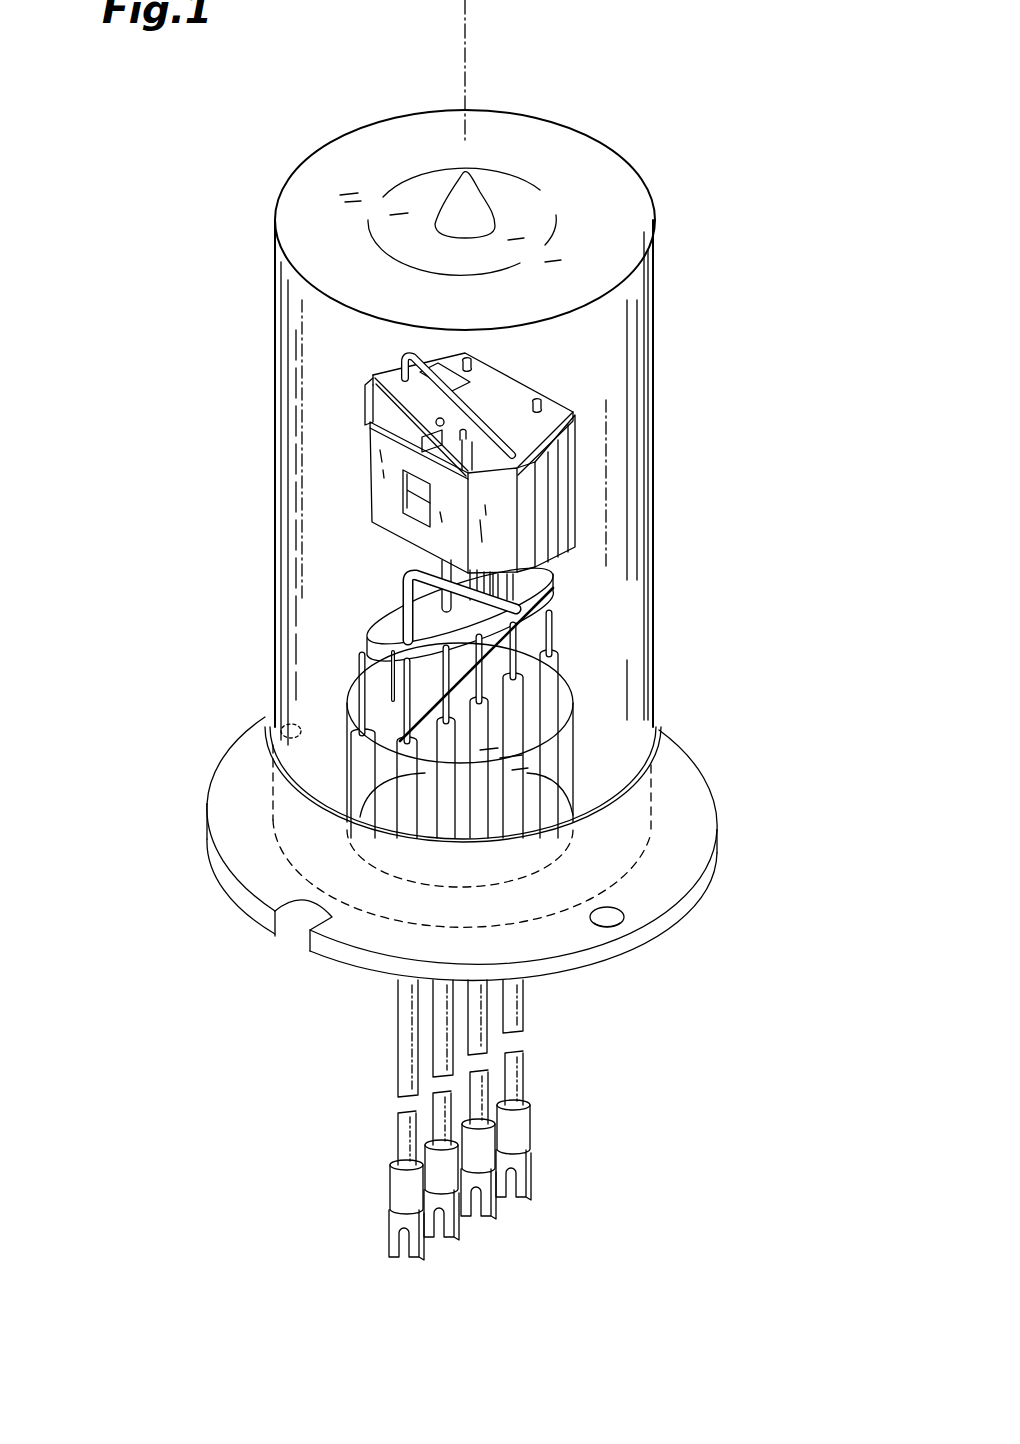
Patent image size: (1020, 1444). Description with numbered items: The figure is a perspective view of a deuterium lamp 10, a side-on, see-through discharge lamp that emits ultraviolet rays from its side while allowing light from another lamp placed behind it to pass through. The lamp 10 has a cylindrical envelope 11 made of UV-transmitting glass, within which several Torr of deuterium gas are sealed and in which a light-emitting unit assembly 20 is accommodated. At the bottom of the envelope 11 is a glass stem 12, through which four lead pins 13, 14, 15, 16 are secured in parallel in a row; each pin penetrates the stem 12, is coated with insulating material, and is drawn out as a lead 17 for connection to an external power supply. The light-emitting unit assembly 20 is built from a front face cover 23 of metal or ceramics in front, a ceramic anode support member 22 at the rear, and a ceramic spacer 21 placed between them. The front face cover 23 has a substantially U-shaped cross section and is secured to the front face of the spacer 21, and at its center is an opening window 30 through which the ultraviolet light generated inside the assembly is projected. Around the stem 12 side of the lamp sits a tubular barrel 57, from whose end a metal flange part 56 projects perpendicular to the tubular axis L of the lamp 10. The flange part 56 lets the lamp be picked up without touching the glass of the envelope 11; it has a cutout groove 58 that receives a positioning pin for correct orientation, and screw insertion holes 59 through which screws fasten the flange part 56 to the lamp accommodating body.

The tubular axis L is at (467, 46).
The deuterium lamp 10 is at (656, 114).
The cylindrical envelope 11 is at (638, 298).
The stem 12 is at (593, 773).
The lead pin 13 is at (517, 640).
The lead pin 14 is at (477, 663).
The lead pin 15 is at (398, 700).
The lead pin 16 is at (400, 740).
The lead 17 is at (440, 1000).
The light-emitting unit assembly 20 is at (574, 463).
The spacer 21 is at (557, 475).
The anode support member 22 is at (527, 393).
The front face cover 23 is at (503, 532).
The opening window 30 is at (403, 487).
The flange part 56 is at (695, 837).
The tubular barrel 57 is at (640, 813).
The cutout groove 58 is at (277, 915).
The screw insertion hole 59 is at (613, 913).